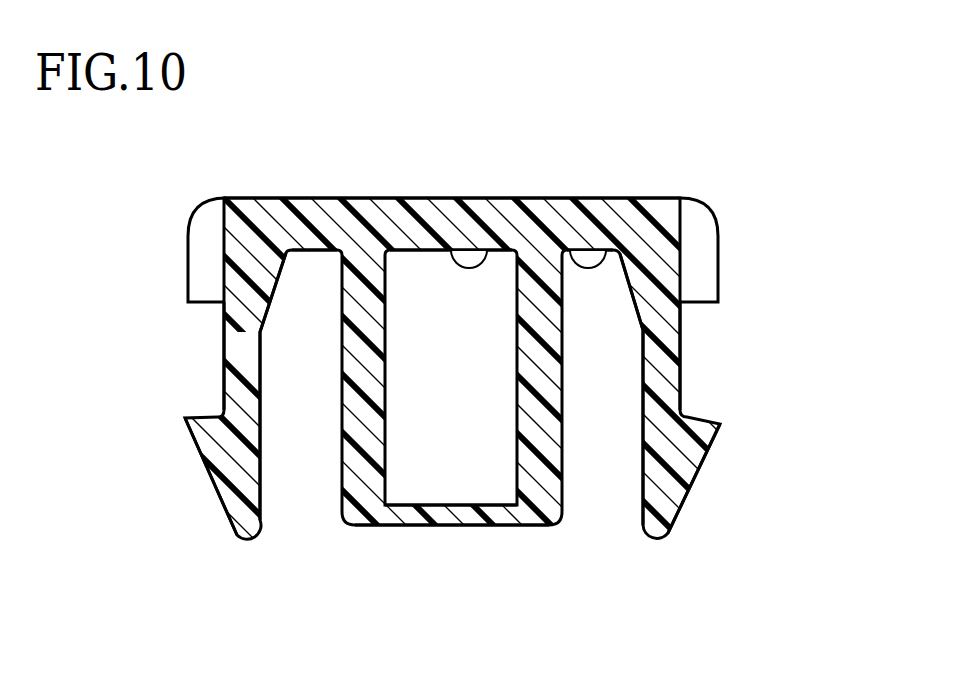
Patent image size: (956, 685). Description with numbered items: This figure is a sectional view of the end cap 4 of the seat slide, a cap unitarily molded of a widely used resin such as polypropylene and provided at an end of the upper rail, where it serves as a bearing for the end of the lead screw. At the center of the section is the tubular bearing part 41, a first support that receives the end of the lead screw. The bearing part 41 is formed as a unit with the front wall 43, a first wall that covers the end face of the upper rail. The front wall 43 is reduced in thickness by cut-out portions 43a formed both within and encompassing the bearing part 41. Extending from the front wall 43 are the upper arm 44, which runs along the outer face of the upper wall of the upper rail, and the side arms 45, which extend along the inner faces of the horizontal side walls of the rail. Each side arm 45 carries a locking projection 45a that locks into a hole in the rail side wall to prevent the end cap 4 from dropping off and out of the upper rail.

The end cap 4 is at (710, 211).
The tubular bearing part 41 is at (553, 522).
The front wall 43 is at (457, 197).
The cut-out portions 43a is at (490, 257).
The upper arm 44 is at (245, 352).
The side arm 45 is at (660, 352).
The locking projection 45a is at (185, 418).